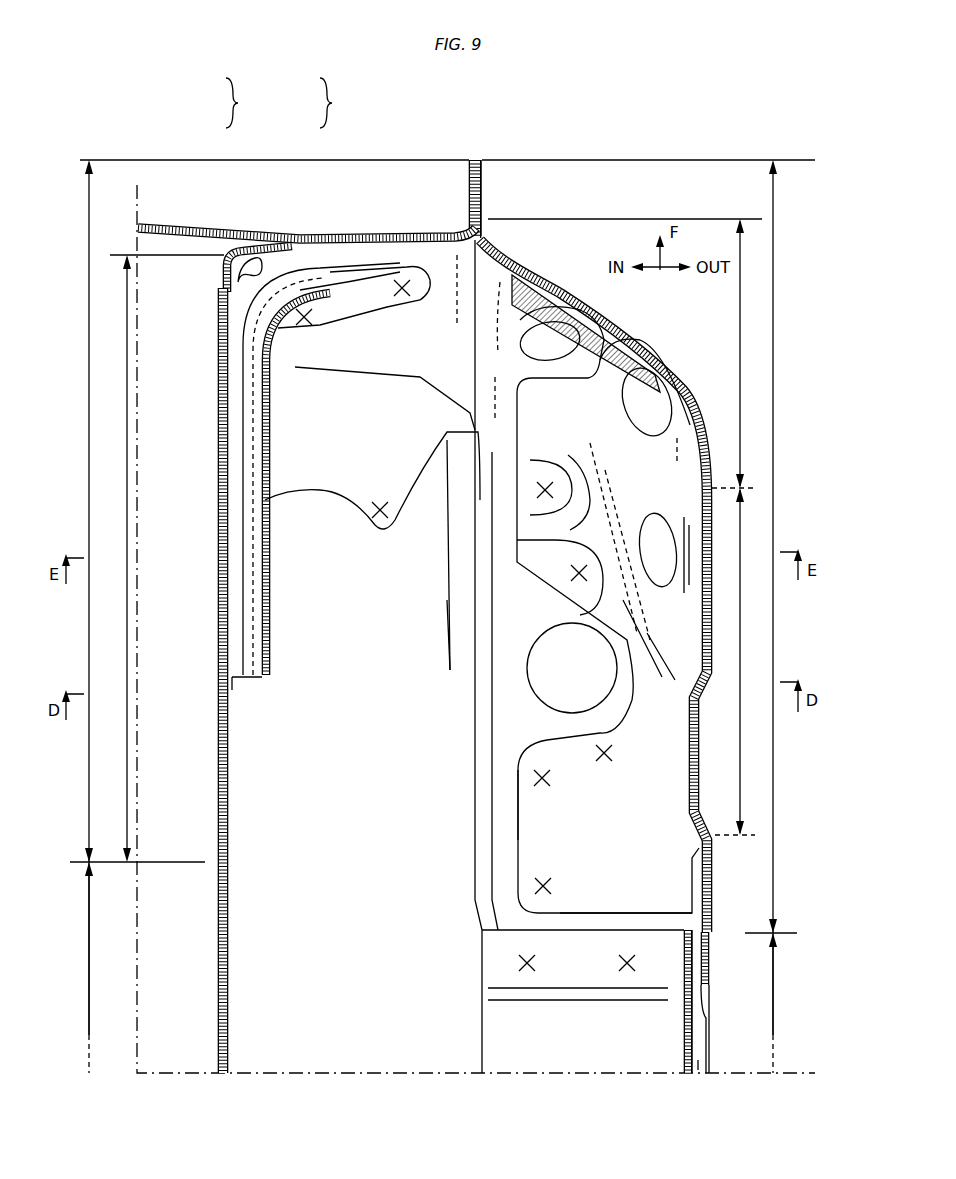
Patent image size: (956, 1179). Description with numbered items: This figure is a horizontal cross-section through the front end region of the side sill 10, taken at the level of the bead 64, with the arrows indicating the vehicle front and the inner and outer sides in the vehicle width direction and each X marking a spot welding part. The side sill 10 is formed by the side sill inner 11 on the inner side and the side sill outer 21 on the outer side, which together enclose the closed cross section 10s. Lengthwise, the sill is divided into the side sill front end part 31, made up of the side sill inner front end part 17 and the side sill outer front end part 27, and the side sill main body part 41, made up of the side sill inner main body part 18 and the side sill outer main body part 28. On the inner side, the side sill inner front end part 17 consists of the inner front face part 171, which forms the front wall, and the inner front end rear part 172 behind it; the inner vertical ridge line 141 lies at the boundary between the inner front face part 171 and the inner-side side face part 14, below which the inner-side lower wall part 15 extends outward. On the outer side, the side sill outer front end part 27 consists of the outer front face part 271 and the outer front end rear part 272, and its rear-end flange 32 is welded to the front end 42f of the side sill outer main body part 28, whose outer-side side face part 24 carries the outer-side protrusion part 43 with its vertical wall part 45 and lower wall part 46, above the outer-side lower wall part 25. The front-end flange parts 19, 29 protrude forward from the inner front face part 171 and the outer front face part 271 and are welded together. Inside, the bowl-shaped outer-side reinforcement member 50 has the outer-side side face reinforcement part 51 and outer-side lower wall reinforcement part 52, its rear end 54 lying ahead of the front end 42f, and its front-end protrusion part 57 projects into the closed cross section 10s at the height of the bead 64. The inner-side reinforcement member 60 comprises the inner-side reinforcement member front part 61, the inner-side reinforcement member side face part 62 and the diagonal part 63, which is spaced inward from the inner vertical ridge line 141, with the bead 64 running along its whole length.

The side sill 10 is at (604, 214).
The closed cross section 10s is at (390, 755).
The side sill inner 11 is at (204, 316).
The inner-side side face part 14 is at (216, 900).
The inner-side lower wall part 15 is at (285, 1062).
The side sill inner front end part 17 is at (133, 616).
The side sill inner main body part 18 is at (75, 955).
The front-end flange part 19 is at (468, 188).
The side sill outer 21 is at (680, 340).
The outer-side side face part 24 is at (708, 1044).
The outer-side lower wall part 25 is at (543, 1060).
The side sill outer front end part 27 is at (773, 616).
The side sill outer main body part 28 is at (787, 991).
The front-end flange part 29 is at (483, 190).
The side sill front end part 31 is at (228, 103).
The rear-end flange 32 is at (709, 962).
The side sill main body part 41 is at (322, 103).
The front end of the side sill outer main body part 42f is at (636, 930).
The outer-side protrusion part 43 is at (676, 1018).
The vertical wall part 45 is at (690, 1040).
The lower wall part 46 is at (697, 1062).
The outer-side reinforcement member 50 is at (510, 848).
The outer-side side face reinforcement part 51 is at (697, 484).
The outer-side lower wall reinforcement part 52 is at (525, 820).
The rear end of the outer-side reinforcement member 54 is at (571, 916).
The front-end protrusion part 57 is at (505, 305).
The inner-side reinforcement member 60 is at (282, 648).
The inner-side reinforcement member front part 61 is at (396, 300).
The inner-side reinforcement member side face part 62 is at (244, 686).
The diagonal part 63 is at (285, 328).
The bead 64 is at (272, 600).
The inner vertical ridge line 141 is at (252, 243).
The inner front face part 171 is at (338, 236).
The inner front end rear part 172 is at (158, 558).
The outer front face part 271 is at (741, 353).
The outer front end rear part 272 is at (742, 661).